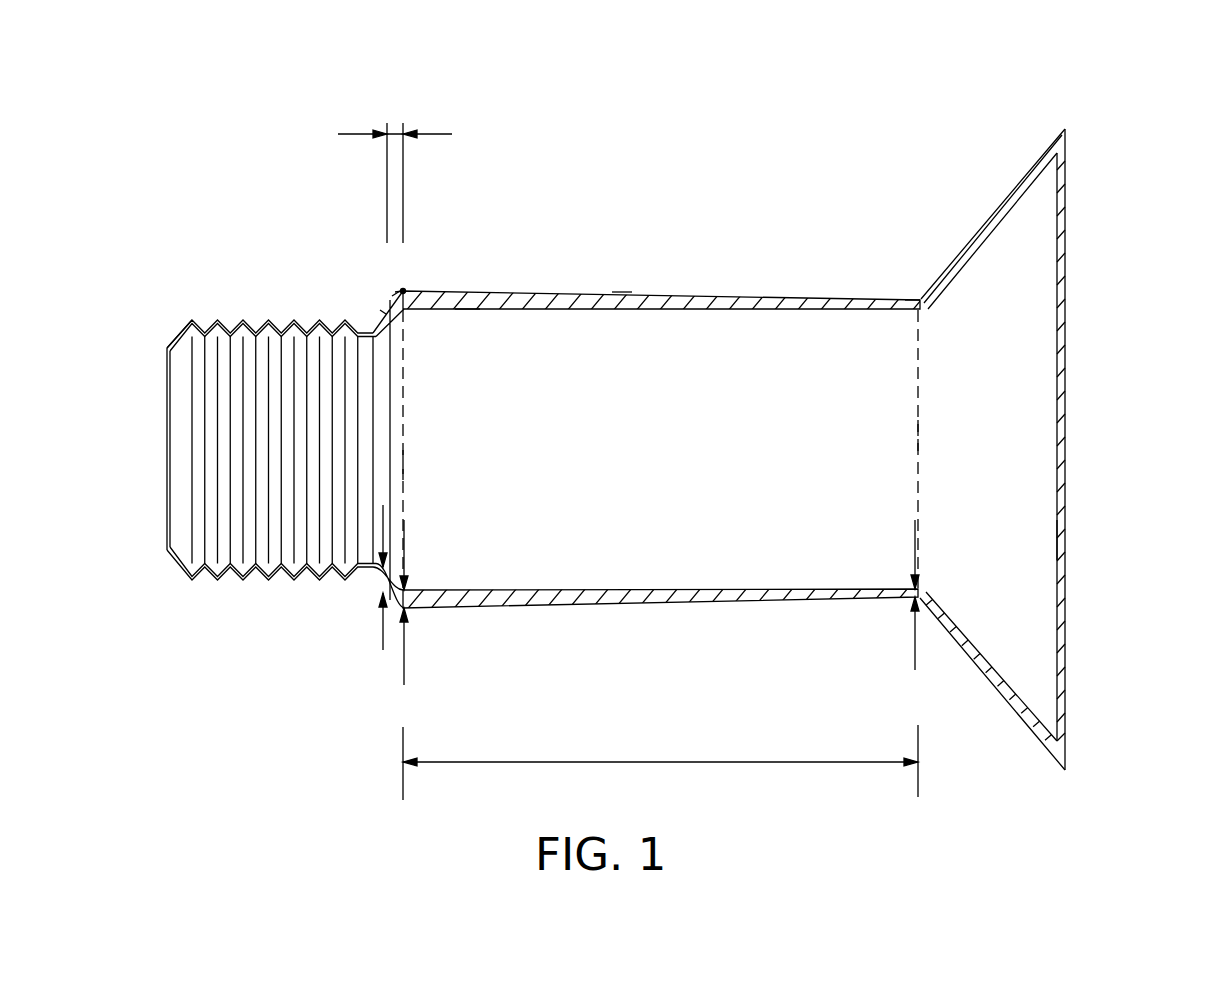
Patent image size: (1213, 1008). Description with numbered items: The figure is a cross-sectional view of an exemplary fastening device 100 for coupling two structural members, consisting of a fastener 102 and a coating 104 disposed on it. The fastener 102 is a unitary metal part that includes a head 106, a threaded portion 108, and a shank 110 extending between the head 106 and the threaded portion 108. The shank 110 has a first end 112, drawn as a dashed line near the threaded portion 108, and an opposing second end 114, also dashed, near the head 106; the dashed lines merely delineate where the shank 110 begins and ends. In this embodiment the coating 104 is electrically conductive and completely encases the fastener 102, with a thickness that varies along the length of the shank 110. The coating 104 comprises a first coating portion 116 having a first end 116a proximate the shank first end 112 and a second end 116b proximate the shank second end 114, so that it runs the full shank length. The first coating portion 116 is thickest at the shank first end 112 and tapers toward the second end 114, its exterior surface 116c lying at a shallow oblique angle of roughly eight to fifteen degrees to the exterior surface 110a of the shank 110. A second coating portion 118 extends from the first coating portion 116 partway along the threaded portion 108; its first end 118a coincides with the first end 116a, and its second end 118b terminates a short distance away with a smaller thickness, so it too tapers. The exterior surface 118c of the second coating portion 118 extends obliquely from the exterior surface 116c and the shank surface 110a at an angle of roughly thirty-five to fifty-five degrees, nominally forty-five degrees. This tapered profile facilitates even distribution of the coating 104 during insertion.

The fastening device 100 is at (215, 155).
The fastener 102 is at (1033, 303).
The coating 104 is at (676, 612).
The head 106 is at (1000, 530).
The threaded portion 108 is at (267, 553).
The shank 110 is at (696, 450).
The exterior surface of the shank 110a is at (474, 306).
The first end of the shank 112 is at (403, 463).
The second end of the shank 114 is at (918, 438).
The first coating portion 116 is at (682, 306).
The first end of the first coating portion 116a is at (404, 290).
The second end of the first coating portion 116b is at (912, 299).
The exterior surface of the first coating portion 116c is at (621, 292).
The second coating portion 118 is at (385, 300).
The first end of the second coating portion 118a is at (401, 289).
The second end of the second coating portion 118b is at (384, 312).
The exterior surface of the second coating portion 118c is at (400, 291).